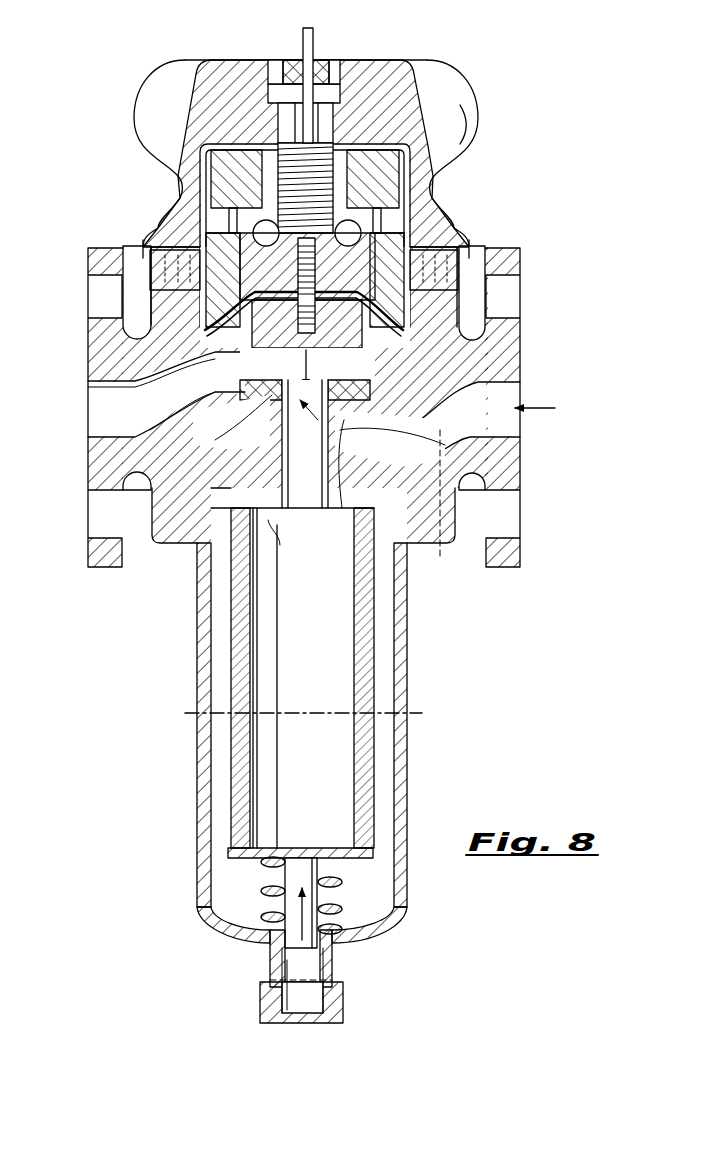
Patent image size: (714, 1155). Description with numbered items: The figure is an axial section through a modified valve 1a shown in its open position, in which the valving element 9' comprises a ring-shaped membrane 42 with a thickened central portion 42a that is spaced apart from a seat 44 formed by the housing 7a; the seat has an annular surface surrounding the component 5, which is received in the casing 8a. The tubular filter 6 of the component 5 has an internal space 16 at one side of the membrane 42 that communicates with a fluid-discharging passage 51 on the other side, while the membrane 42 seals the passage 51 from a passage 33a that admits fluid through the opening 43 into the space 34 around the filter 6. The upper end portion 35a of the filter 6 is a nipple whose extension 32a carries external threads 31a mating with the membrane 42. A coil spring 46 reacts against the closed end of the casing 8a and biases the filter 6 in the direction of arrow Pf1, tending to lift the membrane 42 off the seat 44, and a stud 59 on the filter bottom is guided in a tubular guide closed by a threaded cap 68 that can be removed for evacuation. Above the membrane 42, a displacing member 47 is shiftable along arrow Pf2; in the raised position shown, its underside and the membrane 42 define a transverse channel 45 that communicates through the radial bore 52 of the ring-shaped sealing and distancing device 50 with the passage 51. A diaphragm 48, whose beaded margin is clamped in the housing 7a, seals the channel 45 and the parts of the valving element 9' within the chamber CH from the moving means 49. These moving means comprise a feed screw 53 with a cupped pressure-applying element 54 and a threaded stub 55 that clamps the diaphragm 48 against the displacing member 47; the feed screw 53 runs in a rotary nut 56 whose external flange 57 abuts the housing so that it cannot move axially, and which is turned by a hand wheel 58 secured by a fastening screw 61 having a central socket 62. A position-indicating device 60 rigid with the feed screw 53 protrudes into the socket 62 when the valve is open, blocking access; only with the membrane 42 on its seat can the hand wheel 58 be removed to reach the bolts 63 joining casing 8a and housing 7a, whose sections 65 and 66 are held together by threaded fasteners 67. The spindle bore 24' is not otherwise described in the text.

The modified valve 1a is at (100, 94).
The component 5 is at (232, 814).
The tubular filter 6 is at (238, 742).
The housing 7a is at (88, 343).
The casing 8a is at (195, 670).
The valving element 9' is at (221, 507).
The internal space 16 is at (303, 690).
The spindle bore 24' is at (368, 71).
The external threads 31a is at (333, 480).
The extension 32a is at (305, 444).
The passage 33a is at (515, 432).
The space 34 is at (390, 762).
The upper end portion 35a is at (294, 550).
The ring-shaped membrane 42 is at (400, 392).
The thickened central portion 42a is at (420, 424).
The opening 43 is at (385, 542).
The seat 44 is at (255, 427).
The transverse channel 45 is at (294, 374).
The coil spring 46 is at (260, 895).
The displacing member 47 is at (210, 330).
The diaphragm 48 is at (430, 319).
The moving means 49 is at (405, 224).
The sealing and distancing device 50 is at (440, 346).
The fluid-discharging passage 51 is at (110, 430).
The radial bore 52 is at (205, 384).
The feed screw 53 is at (298, 142).
The pressure-applying element 54 is at (232, 240).
The stub 55 is at (365, 242).
The nut 56 is at (268, 106).
The external flange 57 is at (232, 224).
The hand wheel 58 is at (444, 97).
The stud 59 is at (318, 902).
The blocking and position-indicating device 60 is at (316, 38).
The fastening screw 61 is at (292, 68).
The central socket 62 is at (292, 86).
The bolts 63 is at (148, 246).
The housing section 65 is at (395, 184).
The housing section 66 is at (133, 462).
The threaded fasteners 67 is at (436, 508).
The threaded cap 68 is at (348, 1000).
The chamber CH is at (437, 272).
The arrow Pf1 is at (290, 942).
The arrow Pf2 is at (315, 362).